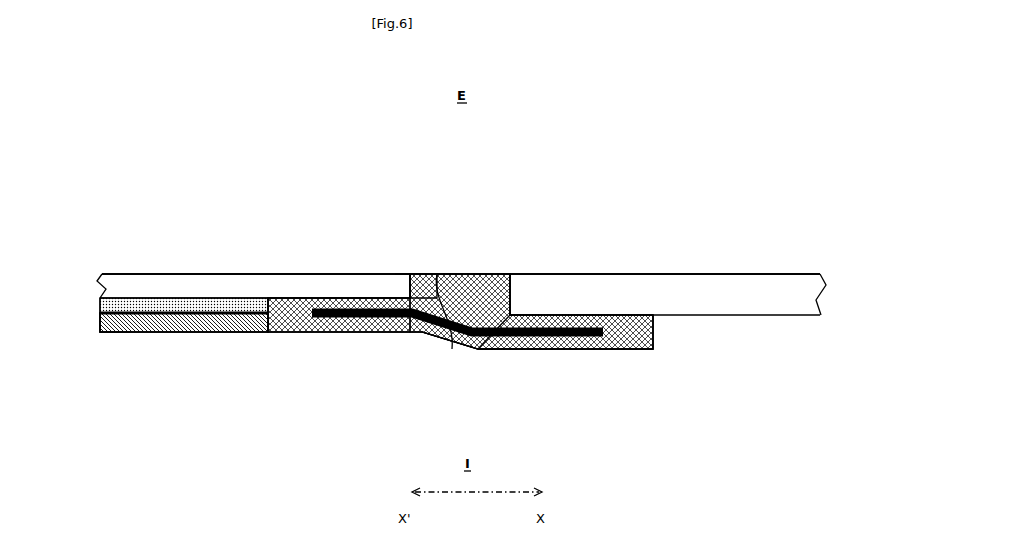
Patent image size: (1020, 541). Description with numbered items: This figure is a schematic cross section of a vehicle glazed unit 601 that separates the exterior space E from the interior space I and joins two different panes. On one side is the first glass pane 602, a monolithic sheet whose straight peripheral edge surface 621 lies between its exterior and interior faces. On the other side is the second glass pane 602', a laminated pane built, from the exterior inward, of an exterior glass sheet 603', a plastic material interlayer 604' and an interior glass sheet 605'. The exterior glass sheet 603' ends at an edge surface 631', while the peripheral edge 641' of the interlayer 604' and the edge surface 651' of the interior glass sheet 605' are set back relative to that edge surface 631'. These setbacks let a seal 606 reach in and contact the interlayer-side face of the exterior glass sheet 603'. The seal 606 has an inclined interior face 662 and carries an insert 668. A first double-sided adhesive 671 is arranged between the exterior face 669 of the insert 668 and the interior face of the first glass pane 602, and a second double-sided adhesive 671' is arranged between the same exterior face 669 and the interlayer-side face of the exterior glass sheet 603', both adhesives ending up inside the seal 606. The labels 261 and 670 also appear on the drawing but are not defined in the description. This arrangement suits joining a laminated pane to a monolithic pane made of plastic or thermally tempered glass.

The glazed unit 601 is at (416, 190).
The second glass pane 602' is at (253, 227).
The exterior glass sheet 603' is at (244, 235).
The plastic material interlayer 604' is at (184, 352).
The interior glass sheet 605' is at (184, 370).
The edge surface 651' is at (296, 351).
The peripheral edge 641' is at (339, 329).
The seal 606 is at (463, 262).
The exterior face of the insert 669 is at (440, 273).
The edge surface 631' is at (383, 254).
The bonding block interface 261 is at (486, 273).
The second double-sided adhesive 671' is at (457, 354).
The interior face of the seal 662 is at (420, 334).
The lower inclined boundary 670 is at (447, 340).
The insert 668 is at (478, 350).
The first double-sided adhesive 671 is at (565, 363).
The first glass pane 602 is at (668, 236).
The peripheral edge surface 621 is at (533, 274).